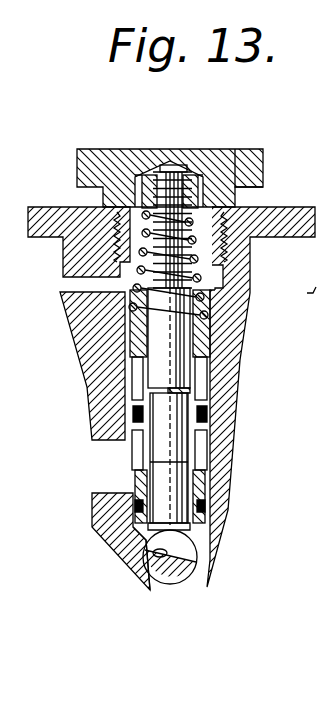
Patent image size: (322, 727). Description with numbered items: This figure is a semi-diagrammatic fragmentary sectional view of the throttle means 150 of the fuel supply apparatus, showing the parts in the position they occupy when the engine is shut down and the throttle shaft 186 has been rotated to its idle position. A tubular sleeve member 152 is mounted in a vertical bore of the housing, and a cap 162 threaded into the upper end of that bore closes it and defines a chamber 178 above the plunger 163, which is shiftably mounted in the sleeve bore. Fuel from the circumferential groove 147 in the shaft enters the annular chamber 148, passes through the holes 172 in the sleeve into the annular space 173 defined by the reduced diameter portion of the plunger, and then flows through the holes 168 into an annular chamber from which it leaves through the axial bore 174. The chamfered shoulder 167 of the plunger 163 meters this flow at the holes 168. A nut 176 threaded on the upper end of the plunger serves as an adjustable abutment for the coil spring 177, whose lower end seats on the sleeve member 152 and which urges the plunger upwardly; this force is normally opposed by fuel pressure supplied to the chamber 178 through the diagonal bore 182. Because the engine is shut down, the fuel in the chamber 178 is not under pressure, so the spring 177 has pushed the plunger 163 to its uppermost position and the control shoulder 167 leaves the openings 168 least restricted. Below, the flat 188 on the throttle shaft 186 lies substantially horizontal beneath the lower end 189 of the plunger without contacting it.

The chamber 178 is at (98, 170).
The nut 176 is at (133, 172).
The coil spring 177 is at (217, 172).
The cap 162 is at (248, 153).
The diagonal bore 182 is at (70, 278).
The plunger 163 is at (169, 406).
The axial bore 174 is at (223, 355).
The holes 168 is at (130, 386).
The sleeve member 152 is at (212, 405).
The chamfered shoulder 167 is at (134, 408).
The circumferential groove 147 is at (130, 438).
The annular space 173 is at (187, 443).
The holes 172 is at (202, 462).
The annular chamber 148 is at (208, 483).
The lower end of plunger 189 is at (207, 532).
The flat 188 is at (150, 567).
The throttle shaft 186 is at (183, 567).
The throttle means 150 is at (270, 556).